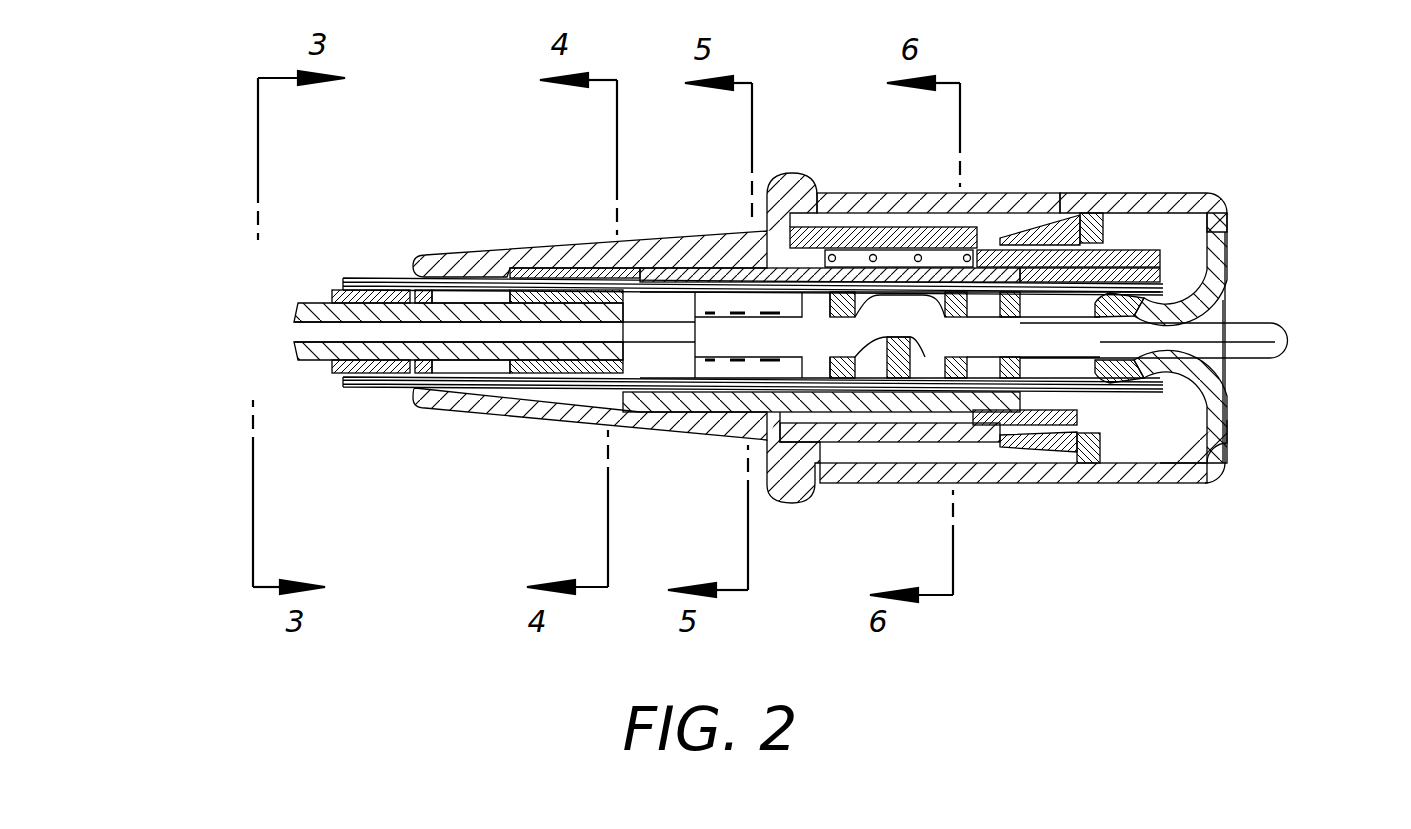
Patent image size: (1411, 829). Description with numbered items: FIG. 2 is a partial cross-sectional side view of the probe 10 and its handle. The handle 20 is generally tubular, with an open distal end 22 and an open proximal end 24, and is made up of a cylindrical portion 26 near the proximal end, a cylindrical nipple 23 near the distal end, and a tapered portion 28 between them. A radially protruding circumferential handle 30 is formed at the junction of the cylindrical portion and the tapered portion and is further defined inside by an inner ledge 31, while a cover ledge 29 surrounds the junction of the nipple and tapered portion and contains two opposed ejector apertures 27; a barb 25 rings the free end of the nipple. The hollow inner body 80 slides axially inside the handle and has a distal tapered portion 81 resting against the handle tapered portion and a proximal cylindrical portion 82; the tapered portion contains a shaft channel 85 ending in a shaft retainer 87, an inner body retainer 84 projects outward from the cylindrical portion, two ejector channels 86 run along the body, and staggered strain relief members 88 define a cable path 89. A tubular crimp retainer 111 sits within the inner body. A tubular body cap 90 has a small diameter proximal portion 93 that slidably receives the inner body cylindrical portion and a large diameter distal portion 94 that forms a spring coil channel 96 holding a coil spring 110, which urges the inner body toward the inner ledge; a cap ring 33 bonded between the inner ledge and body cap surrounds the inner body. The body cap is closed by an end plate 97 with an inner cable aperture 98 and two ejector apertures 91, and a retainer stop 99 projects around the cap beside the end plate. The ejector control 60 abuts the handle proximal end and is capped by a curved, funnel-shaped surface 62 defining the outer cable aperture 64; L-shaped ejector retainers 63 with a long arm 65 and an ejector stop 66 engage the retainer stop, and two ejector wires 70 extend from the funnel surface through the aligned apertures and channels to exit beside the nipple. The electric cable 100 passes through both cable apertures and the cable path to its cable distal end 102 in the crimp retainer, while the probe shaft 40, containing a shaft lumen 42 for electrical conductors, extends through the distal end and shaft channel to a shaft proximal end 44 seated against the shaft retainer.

The probe 10 is at (1017, 552).
The handle 20 is at (850, 193).
The open distal end 22 is at (323, 368).
The cylindrical nipple 23 is at (328, 370).
The open proximal end 24 is at (1058, 230).
The barb 25 is at (355, 290).
The cylindrical portion 26 is at (968, 195).
The ejector apertures 27 is at (414, 290).
The tapered portion 28 is at (480, 415).
The cover ledge 29 is at (408, 395).
The circumferential handle 30 is at (782, 177).
The inner ledge 31 is at (850, 227).
The cap ring 33 is at (883, 268).
The probe shaft 40 is at (298, 300).
The shaft lumen 42 is at (688, 340).
The shaft proximal end 44 is at (690, 292).
The ejector control 60 is at (1200, 193).
The curved, funnel-shaped surface 62 is at (1190, 385).
The ejector retainers 63 is at (1100, 447).
The outer cable aperture 64 is at (1113, 318).
The long arm 65 is at (1060, 450).
The ejector stop 66 is at (985, 213).
The ejector wires 70 is at (382, 277).
The hollow inner body 80 is at (845, 420).
The distal tapered portion 81 is at (546, 410).
The proximal cylindrical portion 82 is at (925, 445).
The inner body retainer 84 is at (785, 440).
The shaft channel 85 is at (462, 352).
The ejector channels 86 is at (518, 290).
The shaft retainer 87 is at (600, 268).
The strain relief members 88 is at (1008, 430).
The cable path 89 is at (1285, 342).
The tubular body cap 90 is at (1205, 462).
The ejector apertures 91 is at (1125, 270).
The small diameter proximal portion 93 is at (1050, 445).
The large diameter distal portion 94 is at (920, 250).
The spring coil channel 96 is at (985, 440).
The end plate 97 is at (1112, 275).
The inner cable aperture 98 is at (1105, 350).
The retainer stop 99 is at (1075, 225).
The electric cable 100 is at (1265, 323).
The cable distal end 102 is at (680, 340).
The coil spring 110 is at (890, 252).
The crimp retainer 111 is at (695, 400).